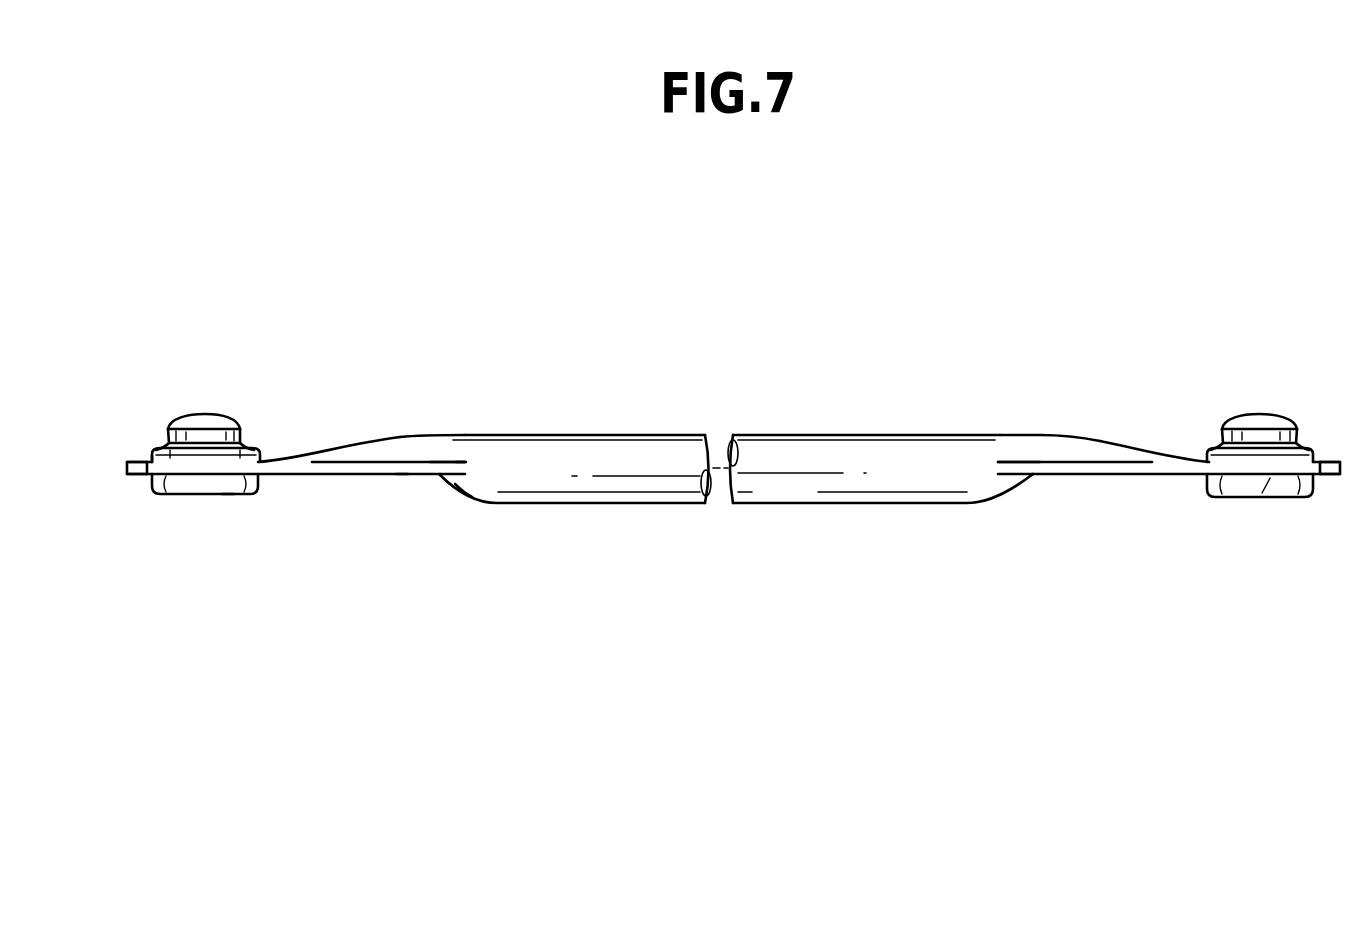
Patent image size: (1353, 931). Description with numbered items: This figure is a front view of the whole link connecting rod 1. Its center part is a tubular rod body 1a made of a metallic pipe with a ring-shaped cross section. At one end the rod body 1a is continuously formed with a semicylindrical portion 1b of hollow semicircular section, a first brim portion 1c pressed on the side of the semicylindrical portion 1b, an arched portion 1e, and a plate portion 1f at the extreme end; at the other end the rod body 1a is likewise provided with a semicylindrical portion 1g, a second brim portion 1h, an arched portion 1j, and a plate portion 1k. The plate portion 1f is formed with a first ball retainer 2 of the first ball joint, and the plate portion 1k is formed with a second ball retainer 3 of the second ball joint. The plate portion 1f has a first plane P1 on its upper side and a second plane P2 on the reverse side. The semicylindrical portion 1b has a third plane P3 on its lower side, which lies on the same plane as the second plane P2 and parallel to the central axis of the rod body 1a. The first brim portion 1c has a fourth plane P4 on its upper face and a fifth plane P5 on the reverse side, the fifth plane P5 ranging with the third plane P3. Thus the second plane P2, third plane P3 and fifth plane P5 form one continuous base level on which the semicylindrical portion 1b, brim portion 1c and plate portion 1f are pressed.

The link connecting rod 1 is at (1080, 247).
The rod body 1a is at (772, 504).
The semicylindrical portion 1b is at (403, 443).
The first brim portion 1c is at (423, 463).
The arched portion 1e is at (293, 458).
The plate portion 1f is at (133, 475).
The semicylindrical portion 1g is at (1080, 445).
The second brim portion 1h is at (1035, 467).
The arched portion 1j is at (1180, 460).
The plate portion 1k is at (1333, 475).
The first ball retainer 2 is at (197, 417).
The second ball retainer 3 is at (1285, 420).
The first plane P1 is at (157, 453).
The second plane P2 is at (227, 493).
The third plane P3 is at (402, 476).
The fourth plane P4 is at (462, 461).
The fifth plane P5 is at (460, 479).